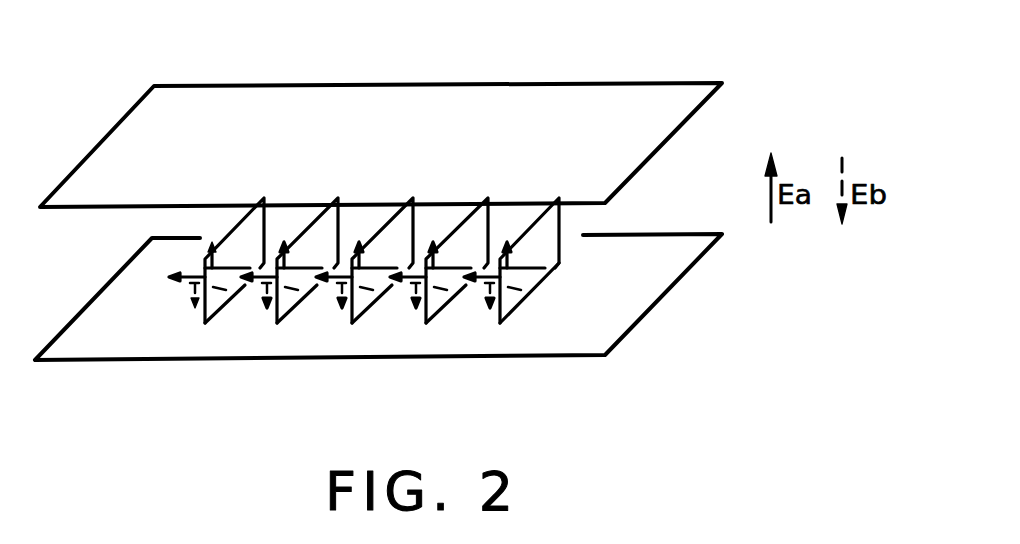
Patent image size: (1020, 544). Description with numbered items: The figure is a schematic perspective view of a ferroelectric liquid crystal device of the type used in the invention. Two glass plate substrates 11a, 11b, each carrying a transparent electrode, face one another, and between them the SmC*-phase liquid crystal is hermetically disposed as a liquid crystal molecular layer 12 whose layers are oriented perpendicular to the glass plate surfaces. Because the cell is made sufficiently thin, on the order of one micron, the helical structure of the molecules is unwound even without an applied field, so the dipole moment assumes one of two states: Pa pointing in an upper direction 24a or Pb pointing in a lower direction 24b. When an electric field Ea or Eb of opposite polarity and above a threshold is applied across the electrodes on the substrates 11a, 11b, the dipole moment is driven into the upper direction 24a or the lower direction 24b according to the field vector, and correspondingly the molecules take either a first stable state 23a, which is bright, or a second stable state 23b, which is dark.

The substrate 11a is at (643, 86).
The substrate 11b is at (638, 304).
The liquid crystal molecular layer 12 is at (552, 229).
The first stable state 23a is at (238, 262).
The second stable state 23b is at (212, 290).
The upper direction 24a is at (204, 242).
The lower direction 24b is at (188, 294).